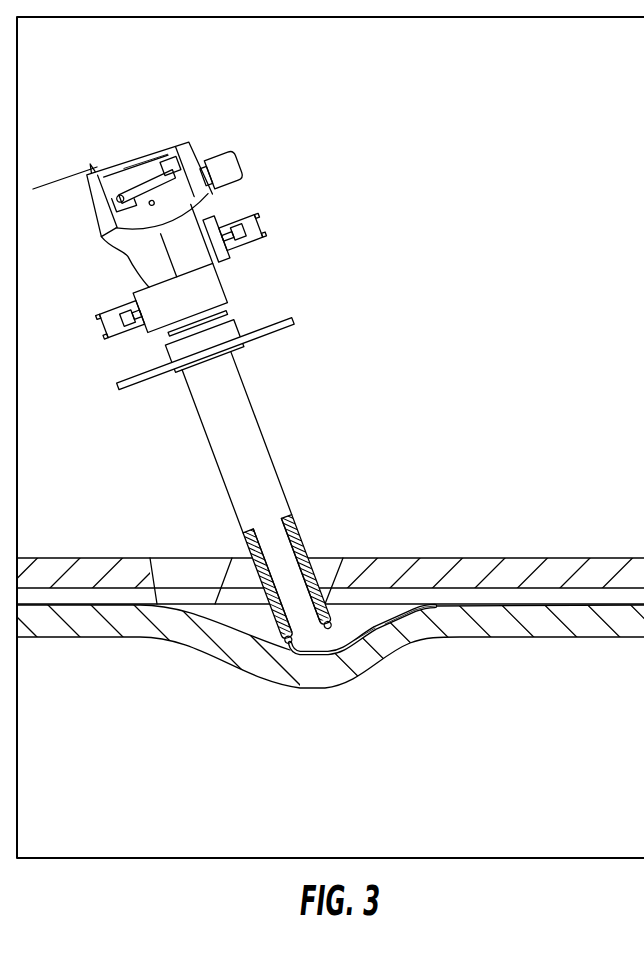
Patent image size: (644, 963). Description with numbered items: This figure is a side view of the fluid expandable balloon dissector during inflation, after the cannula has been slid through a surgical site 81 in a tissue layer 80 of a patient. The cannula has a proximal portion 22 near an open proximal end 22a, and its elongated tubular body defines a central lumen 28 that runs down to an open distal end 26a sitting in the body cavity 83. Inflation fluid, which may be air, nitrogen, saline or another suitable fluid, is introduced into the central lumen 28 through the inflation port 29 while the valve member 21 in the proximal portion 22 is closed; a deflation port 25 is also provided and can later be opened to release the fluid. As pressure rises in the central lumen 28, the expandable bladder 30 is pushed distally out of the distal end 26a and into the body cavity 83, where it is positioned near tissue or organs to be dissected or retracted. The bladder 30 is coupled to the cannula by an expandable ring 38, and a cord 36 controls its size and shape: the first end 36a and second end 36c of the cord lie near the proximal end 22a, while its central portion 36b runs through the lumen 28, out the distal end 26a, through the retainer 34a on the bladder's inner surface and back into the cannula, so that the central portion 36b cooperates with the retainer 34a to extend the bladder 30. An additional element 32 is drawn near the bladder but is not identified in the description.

The valve member 21 is at (153, 173).
The proximal portion 22 is at (206, 141).
The open proximal end 22a is at (143, 170).
The deflation port 25 is at (262, 226).
The open distal end 26a is at (307, 637).
The central lumen 28 is at (283, 558).
The inflation port 29 is at (100, 327).
The expandable bladder 30 is at (367, 645).
The liner upper layer 32 is at (380, 608).
The retainer 34a is at (402, 605).
The cord 36 is at (99, 158).
The first end 36a is at (163, 167).
The central portion 36b is at (410, 613).
The second end 36c is at (43, 193).
The expandable ring 38 is at (287, 650).
The tissue layer 80 is at (524, 557).
The surgical site 81 is at (253, 577).
The body cavity 83 is at (243, 620).